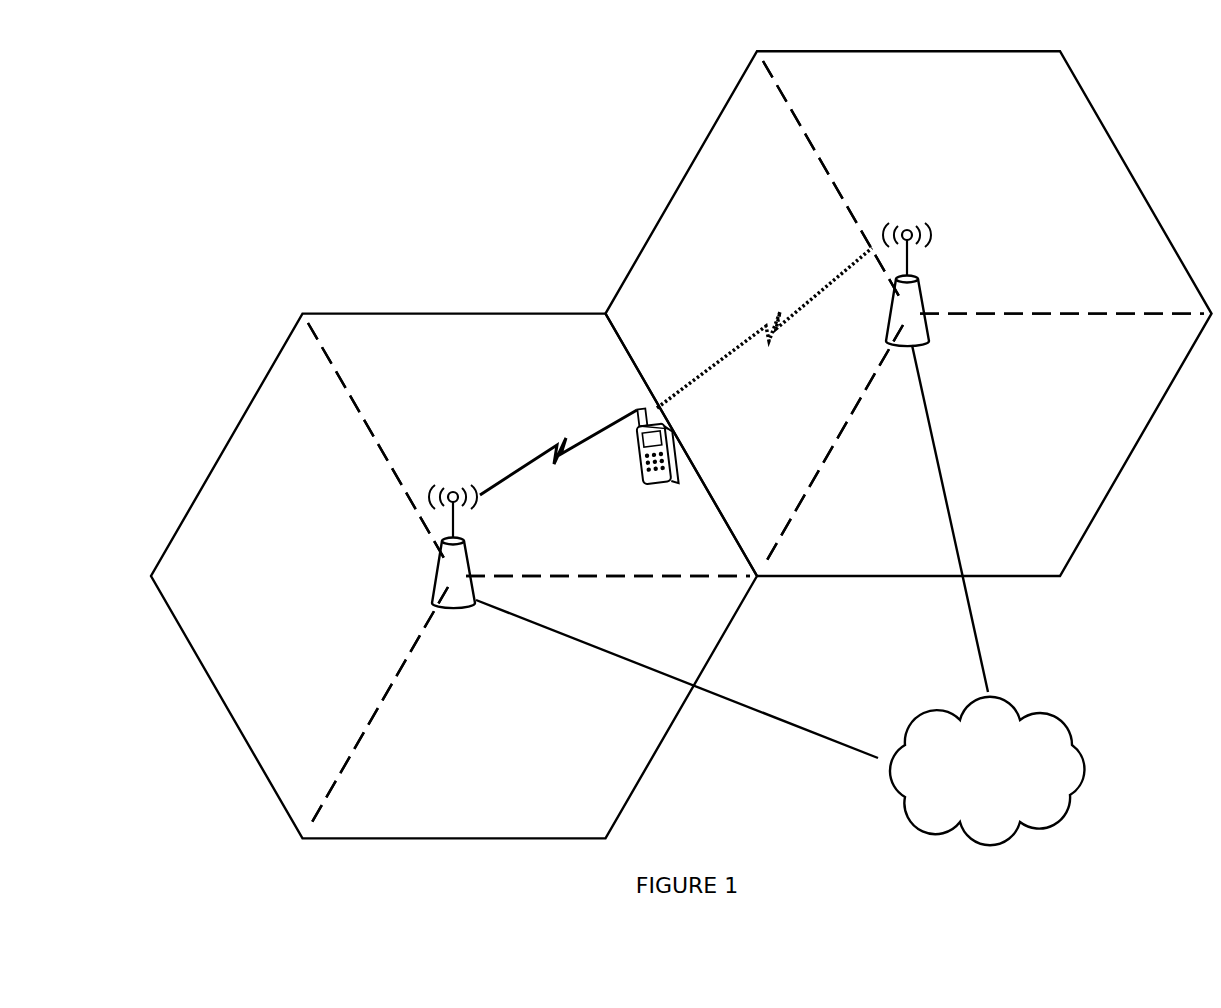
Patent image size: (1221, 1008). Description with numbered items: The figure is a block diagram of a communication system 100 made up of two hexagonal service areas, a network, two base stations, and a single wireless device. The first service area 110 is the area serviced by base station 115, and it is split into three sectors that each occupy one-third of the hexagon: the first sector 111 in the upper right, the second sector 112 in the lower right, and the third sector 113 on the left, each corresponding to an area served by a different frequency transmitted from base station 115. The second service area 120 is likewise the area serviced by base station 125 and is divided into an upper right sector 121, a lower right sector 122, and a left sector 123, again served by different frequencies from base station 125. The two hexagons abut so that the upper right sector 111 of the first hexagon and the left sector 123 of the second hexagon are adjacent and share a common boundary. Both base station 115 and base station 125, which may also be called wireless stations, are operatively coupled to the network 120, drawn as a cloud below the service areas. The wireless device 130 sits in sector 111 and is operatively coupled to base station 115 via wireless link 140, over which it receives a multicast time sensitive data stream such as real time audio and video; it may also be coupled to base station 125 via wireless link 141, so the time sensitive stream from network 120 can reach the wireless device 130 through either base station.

The communication system 100 is at (167, 106).
The service area 110 is at (302, 836).
The sector A1 111 is at (606, 374).
The sector B1 112 is at (601, 812).
The sector C1 113 is at (225, 600).
The base station 115 is at (432, 602).
The service area 120 is at (1060, 577).
The sector A2 121 is at (1022, 112).
The sector B2 122 is at (1017, 547).
The sector C2 123 is at (675, 317).
The base station 125 is at (888, 343).
The wireless device 130 is at (657, 483).
The wireless link 140 is at (560, 441).
The wireless link 141 is at (772, 316).